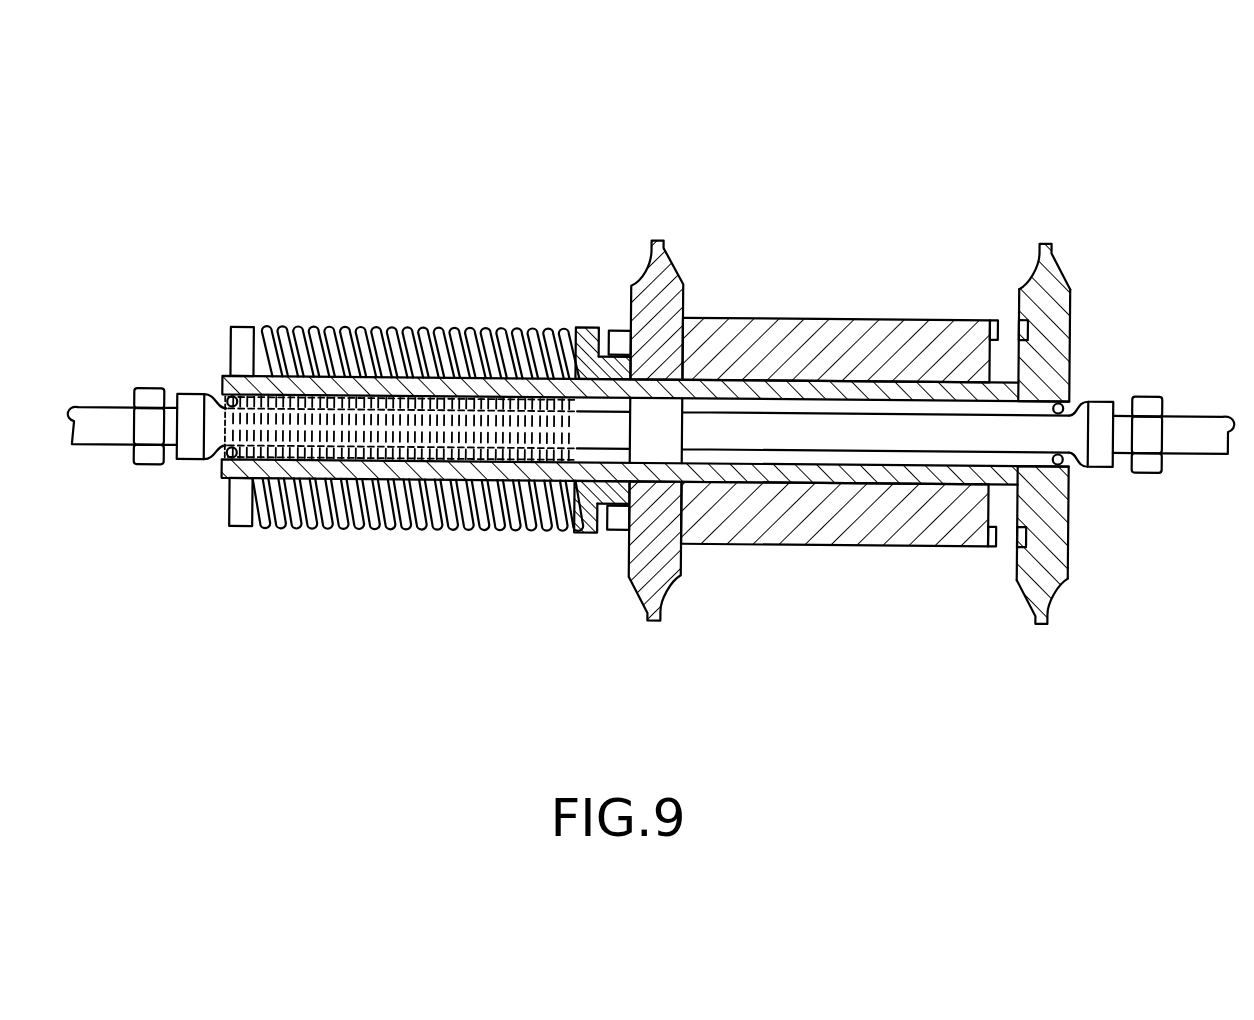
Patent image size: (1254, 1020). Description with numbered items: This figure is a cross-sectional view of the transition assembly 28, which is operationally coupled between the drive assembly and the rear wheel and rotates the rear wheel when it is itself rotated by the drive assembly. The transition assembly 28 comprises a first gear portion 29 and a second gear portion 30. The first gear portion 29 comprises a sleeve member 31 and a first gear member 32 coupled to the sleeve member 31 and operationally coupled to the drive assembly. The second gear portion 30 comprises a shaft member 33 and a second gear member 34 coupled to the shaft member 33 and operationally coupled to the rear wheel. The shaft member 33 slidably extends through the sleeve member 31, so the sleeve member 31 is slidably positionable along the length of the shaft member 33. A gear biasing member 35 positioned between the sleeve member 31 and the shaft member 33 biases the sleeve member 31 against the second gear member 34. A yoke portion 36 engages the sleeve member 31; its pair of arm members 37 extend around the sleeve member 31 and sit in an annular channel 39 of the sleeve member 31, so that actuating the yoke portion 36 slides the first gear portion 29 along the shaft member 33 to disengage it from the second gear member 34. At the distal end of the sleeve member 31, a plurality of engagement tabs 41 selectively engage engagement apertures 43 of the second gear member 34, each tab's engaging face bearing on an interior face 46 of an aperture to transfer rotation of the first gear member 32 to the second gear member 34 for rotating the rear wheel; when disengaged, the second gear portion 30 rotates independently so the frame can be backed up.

The transition assembly 28 is at (651, 400).
The first gear portion 29 is at (786, 536).
The second gear portion 30 is at (1050, 595).
The sleeve member 31 is at (777, 331).
The first gear member 32 is at (666, 273).
The shaft member 33 is at (463, 472).
The second gear member 34 is at (1051, 529).
The gear biasing member 35 is at (342, 525).
The yoke portion 36 is at (603, 531).
The arm members 37 is at (619, 344).
The annular channel 39 is at (604, 349).
The engagement tabs 41 is at (990, 322).
The engagement apertures 43 is at (1039, 279).
The interior face 46 is at (1018, 322).